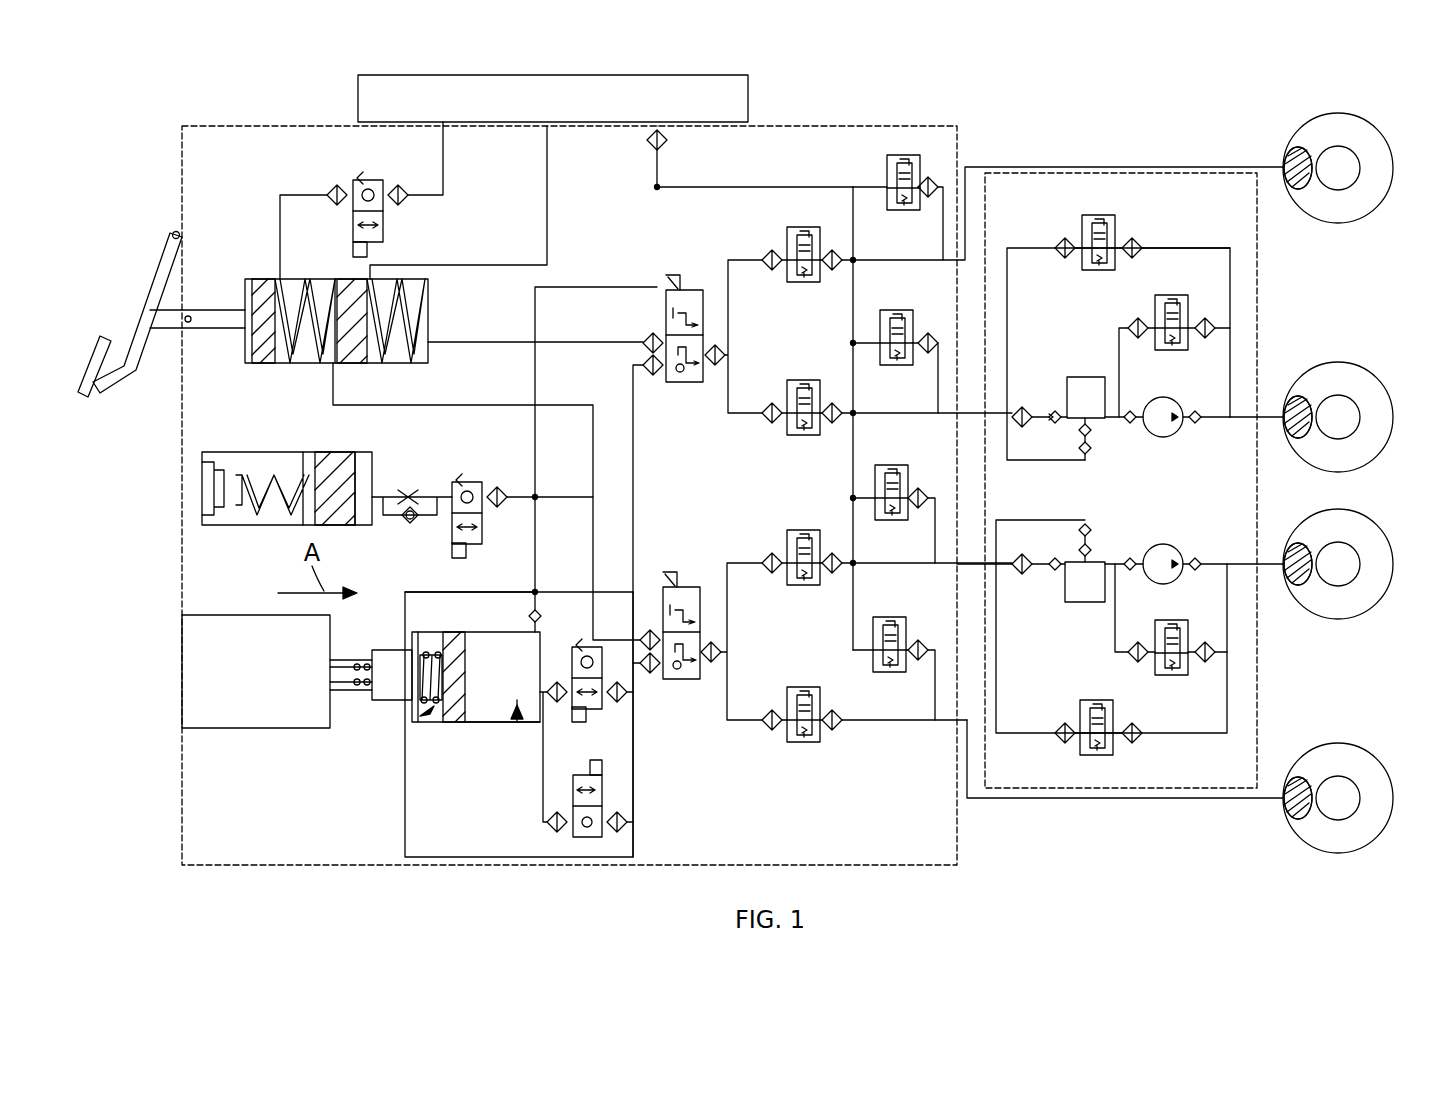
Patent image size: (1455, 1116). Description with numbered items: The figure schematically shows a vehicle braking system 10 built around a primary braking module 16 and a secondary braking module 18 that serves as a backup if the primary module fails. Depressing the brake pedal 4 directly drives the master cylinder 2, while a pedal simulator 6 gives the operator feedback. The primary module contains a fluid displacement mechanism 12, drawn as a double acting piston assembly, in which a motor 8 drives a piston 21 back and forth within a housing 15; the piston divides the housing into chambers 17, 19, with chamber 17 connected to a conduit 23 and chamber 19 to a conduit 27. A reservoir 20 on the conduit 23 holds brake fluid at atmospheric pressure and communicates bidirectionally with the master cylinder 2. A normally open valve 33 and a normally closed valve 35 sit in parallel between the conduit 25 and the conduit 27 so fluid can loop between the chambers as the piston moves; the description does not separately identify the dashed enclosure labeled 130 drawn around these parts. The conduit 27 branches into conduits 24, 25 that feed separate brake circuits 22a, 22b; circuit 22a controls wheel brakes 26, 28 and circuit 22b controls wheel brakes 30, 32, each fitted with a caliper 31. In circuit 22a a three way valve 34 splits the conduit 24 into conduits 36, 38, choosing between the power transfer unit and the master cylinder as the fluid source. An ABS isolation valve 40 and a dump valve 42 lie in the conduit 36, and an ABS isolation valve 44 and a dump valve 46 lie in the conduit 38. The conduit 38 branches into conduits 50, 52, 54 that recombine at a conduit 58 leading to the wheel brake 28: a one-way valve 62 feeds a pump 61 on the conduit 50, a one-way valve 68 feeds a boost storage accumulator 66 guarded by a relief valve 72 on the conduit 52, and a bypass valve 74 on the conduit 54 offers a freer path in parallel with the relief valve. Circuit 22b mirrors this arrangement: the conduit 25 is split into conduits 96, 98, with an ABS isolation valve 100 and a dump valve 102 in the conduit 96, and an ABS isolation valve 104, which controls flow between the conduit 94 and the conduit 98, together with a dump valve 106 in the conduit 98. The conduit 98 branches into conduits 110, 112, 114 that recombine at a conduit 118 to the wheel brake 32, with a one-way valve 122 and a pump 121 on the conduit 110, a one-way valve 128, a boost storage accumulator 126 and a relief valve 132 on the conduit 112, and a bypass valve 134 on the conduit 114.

The braking system 10 is at (172, 128).
The brake pedal 4 is at (155, 292).
The master cylinder 2 is at (262, 279).
The reservoir 20 is at (553, 98).
The primary braking module 16 is at (810, 121).
The conduit 23 is at (662, 150).
The dump valve 42 is at (885, 176).
The three way valve 34 is at (682, 287).
The ABS isolation valve 40 is at (787, 250).
The dump valve 46 is at (893, 310).
The ABS isolation valve 44 is at (797, 380).
The conduit 38 is at (938, 362).
The conduit 24 is at (633, 437).
The dump valve 106 is at (885, 465).
The ABS isolation valve 104 is at (798, 530).
The conduit 94 is at (675, 585).
The dump valve 102 is at (885, 617).
The conduit 98 is at (931, 573).
The ABS isolation valve 100 is at (803, 745).
The pedal simulator 6 is at (202, 497).
The motor 8 is at (220, 683).
The piston 21 is at (458, 632).
The chamber 17 is at (418, 712).
The housing 15 is at (444, 722).
The fluid displacement mechanism 12 is at (481, 722).
The chamber 19 is at (518, 722).
The conduit 27 is at (544, 738).
The valve 33 is at (615, 708).
The conduit 25 is at (635, 758).
The valve 35 is at (568, 815).
The pump unit 130 is at (485, 860).
The conduit 36 is at (1125, 166).
The bypass valve 74 is at (1081, 232).
The conduit 54 is at (1195, 247).
The relief valve 72 is at (1155, 314).
The boost storage accumulator 66 is at (1082, 377).
The one-way valve 68 is at (1038, 415).
The conduit 52 is at (1120, 375).
The one-way valve 62 is at (1082, 432).
The conduit 50 is at (1123, 419).
The conduit 58 is at (1240, 420).
The pump 61 is at (1168, 437).
The brake circuit 22a is at (1283, 292).
The secondary braking module 18 is at (1268, 341).
The caliper 31 is at (1295, 150).
The wheel brake 26 is at (1393, 171).
The wheel brake 28 is at (1393, 420).
The wheel brake 30 is at (1393, 565).
The wheel brake 32 is at (1393, 800).
The pump 121 is at (1163, 544).
The conduit 110 is at (1123, 562).
The conduit 118 is at (1233, 562).
The one-way valve 122 is at (1078, 556).
The one-way valve 128 is at (1058, 570).
The conduit 112 is at (1115, 595).
The boost storage accumulator 126 is at (1081, 602).
The conduit 114 is at (1230, 625).
The relief valve 132 is at (1155, 676).
The bypass valve 134 is at (1117, 744).
The brake circuit 22b is at (1283, 707).
The conduit 96 is at (1120, 800).